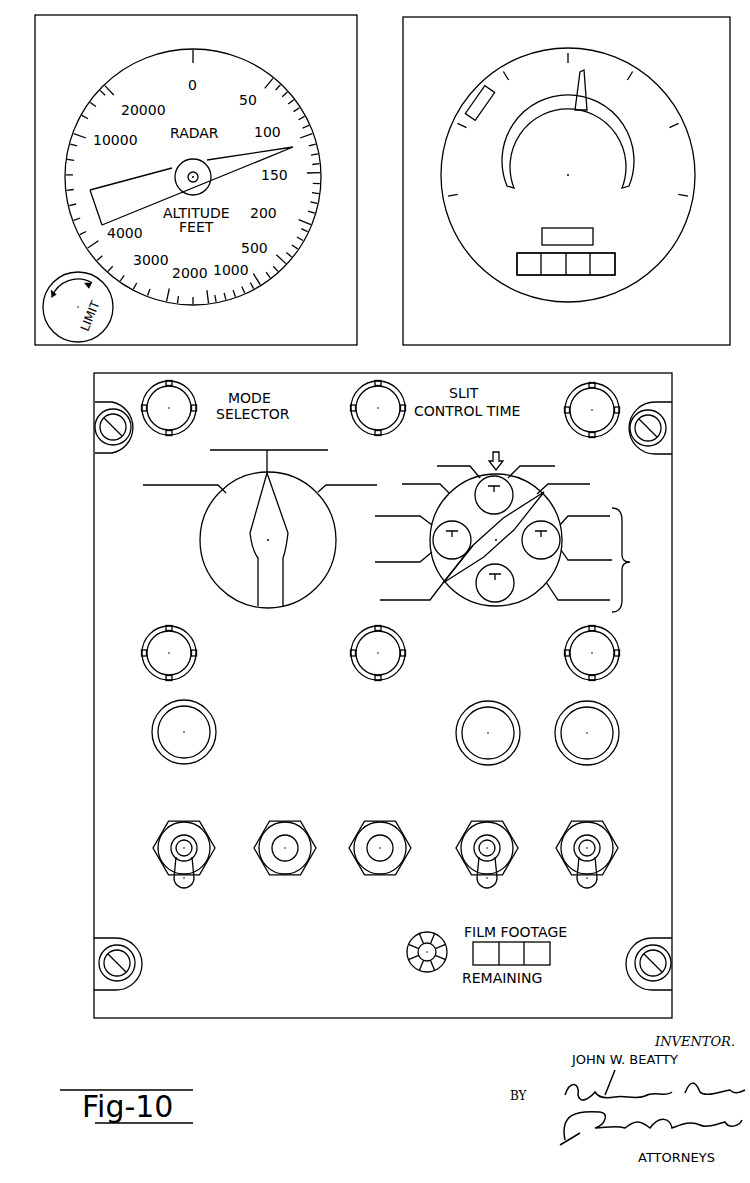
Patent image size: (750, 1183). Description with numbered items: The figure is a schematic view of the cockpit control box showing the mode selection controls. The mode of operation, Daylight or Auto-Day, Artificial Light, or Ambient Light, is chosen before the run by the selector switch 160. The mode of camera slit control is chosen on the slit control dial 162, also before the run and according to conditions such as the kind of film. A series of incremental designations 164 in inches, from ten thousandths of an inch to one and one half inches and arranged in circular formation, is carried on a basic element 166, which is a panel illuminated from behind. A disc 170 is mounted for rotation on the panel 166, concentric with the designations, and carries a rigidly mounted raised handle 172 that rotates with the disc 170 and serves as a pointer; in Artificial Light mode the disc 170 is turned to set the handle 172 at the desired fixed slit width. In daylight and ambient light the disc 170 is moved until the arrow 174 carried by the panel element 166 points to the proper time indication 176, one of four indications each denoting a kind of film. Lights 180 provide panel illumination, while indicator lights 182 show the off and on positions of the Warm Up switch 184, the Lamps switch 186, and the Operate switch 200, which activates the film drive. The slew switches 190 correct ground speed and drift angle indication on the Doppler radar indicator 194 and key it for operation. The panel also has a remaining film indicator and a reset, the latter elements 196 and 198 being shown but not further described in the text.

The selector switch 160 is at (258, 535).
The slit control dial 162 is at (622, 487).
The incremental designations 164 is at (630, 562).
The basic element 166 is at (672, 703).
The disc 170 is at (516, 543).
The raised handle 172 is at (460, 588).
The arrow 174 is at (505, 462).
The time indication 176 is at (512, 490).
The lights 180 is at (180, 665).
The indicator lights 182 is at (205, 735).
The Warm Up switch 184 is at (200, 858).
The Lamps switch 186 is at (500, 857).
The slew switches 190 is at (375, 862).
The Doppler radar indicator 194 is at (703, 345).
The counter display 196 is at (660, 252).
The reset knob 198 is at (424, 972).
The Operate switch 200 is at (612, 852).